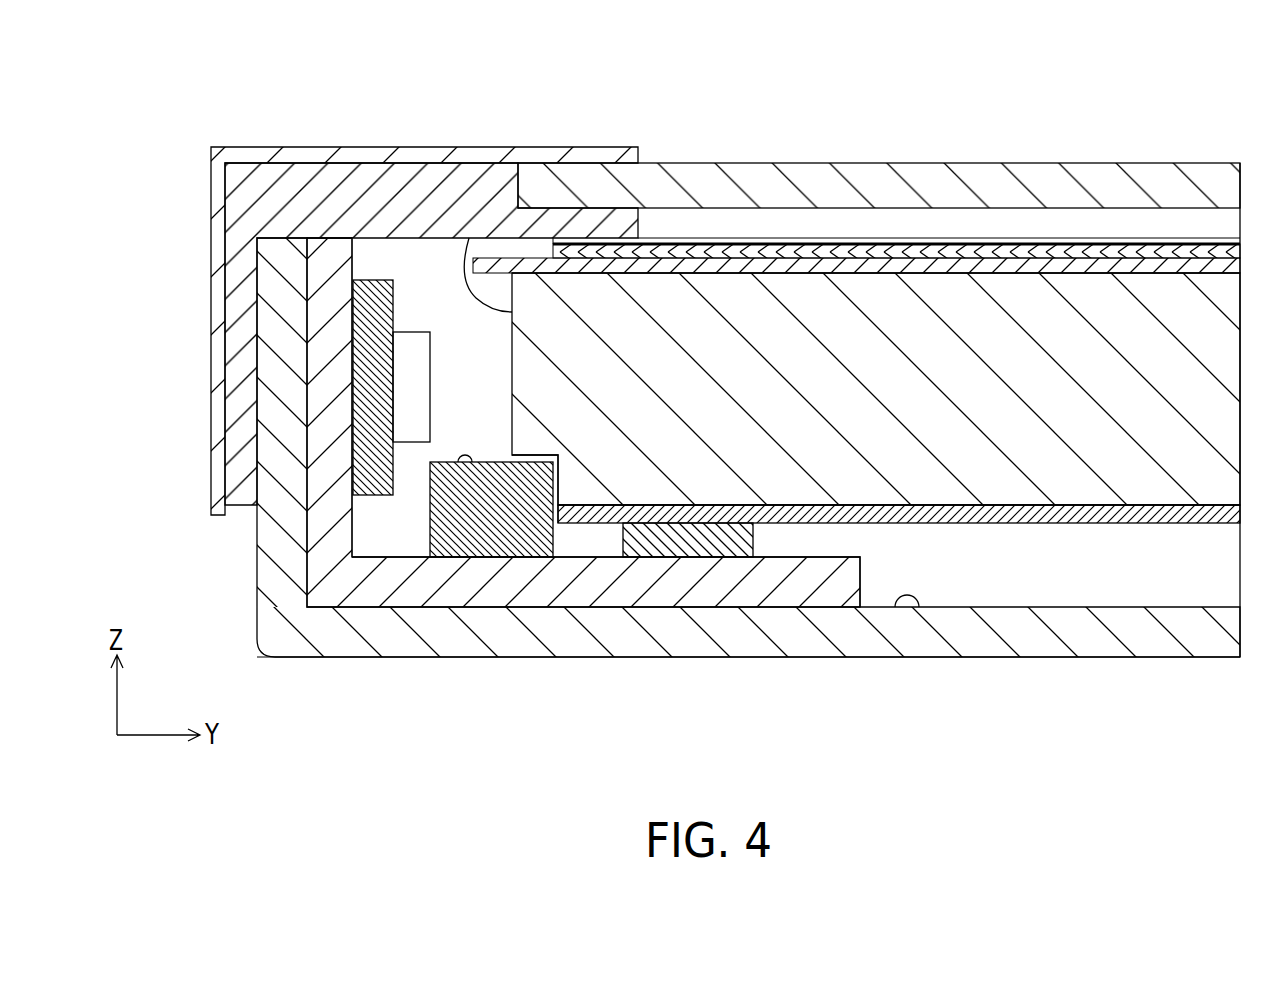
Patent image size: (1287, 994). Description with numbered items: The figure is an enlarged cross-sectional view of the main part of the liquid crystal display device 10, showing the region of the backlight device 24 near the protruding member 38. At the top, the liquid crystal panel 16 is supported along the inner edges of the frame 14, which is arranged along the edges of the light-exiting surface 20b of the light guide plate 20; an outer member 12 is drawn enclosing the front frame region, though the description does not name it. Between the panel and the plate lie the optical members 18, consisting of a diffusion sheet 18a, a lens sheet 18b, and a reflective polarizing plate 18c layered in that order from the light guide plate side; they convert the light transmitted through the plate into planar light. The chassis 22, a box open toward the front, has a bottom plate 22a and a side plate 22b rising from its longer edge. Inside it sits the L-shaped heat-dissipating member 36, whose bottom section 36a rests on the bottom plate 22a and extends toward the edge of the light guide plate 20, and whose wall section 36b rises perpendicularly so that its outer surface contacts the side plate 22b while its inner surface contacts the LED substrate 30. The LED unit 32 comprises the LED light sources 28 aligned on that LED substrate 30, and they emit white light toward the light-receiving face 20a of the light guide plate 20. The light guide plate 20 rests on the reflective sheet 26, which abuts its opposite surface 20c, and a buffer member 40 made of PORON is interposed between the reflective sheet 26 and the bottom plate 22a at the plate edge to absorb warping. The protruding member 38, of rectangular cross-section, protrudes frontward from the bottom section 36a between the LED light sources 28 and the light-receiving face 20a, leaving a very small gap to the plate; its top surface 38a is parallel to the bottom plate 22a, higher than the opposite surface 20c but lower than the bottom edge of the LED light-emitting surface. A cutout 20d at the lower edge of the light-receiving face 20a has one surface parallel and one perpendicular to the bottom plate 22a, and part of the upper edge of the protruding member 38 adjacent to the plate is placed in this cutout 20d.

The liquid crystal display device 10 is at (801, 105).
The front frame 12 is at (250, 160).
The frame 14 is at (305, 163).
The liquid crystal panel 16 is at (695, 190).
The optical members 18 is at (1105, 113).
The diffusion sheet 18a is at (953, 262).
The lens sheet 18b is at (1012, 250).
The reflective polarizing plate 18c is at (1065, 240).
The light guide plate 20 is at (1057, 467).
The light-receiving face 20a is at (469, 238).
The light-exiting surface 20b is at (863, 270).
The opposite surface 20c is at (1100, 507).
The cutout 20d is at (557, 487).
The chassis 22 is at (689, 486).
The bottom plate 22a is at (920, 610).
The side plate 22b is at (283, 360).
The backlight device 24 is at (810, 685).
The reflective sheet 26 is at (985, 507).
The LED light source 28 is at (412, 413).
The LED substrate 30 is at (370, 475).
The LED unit 32 is at (415, 721).
The heat-dissipating member 36 is at (330, 545).
The bottom section 36a is at (617, 580).
The wall section 36b is at (330, 433).
The protruding member 38 is at (503, 513).
The top surface 38a is at (456, 462).
The buffer member 40 is at (682, 545).